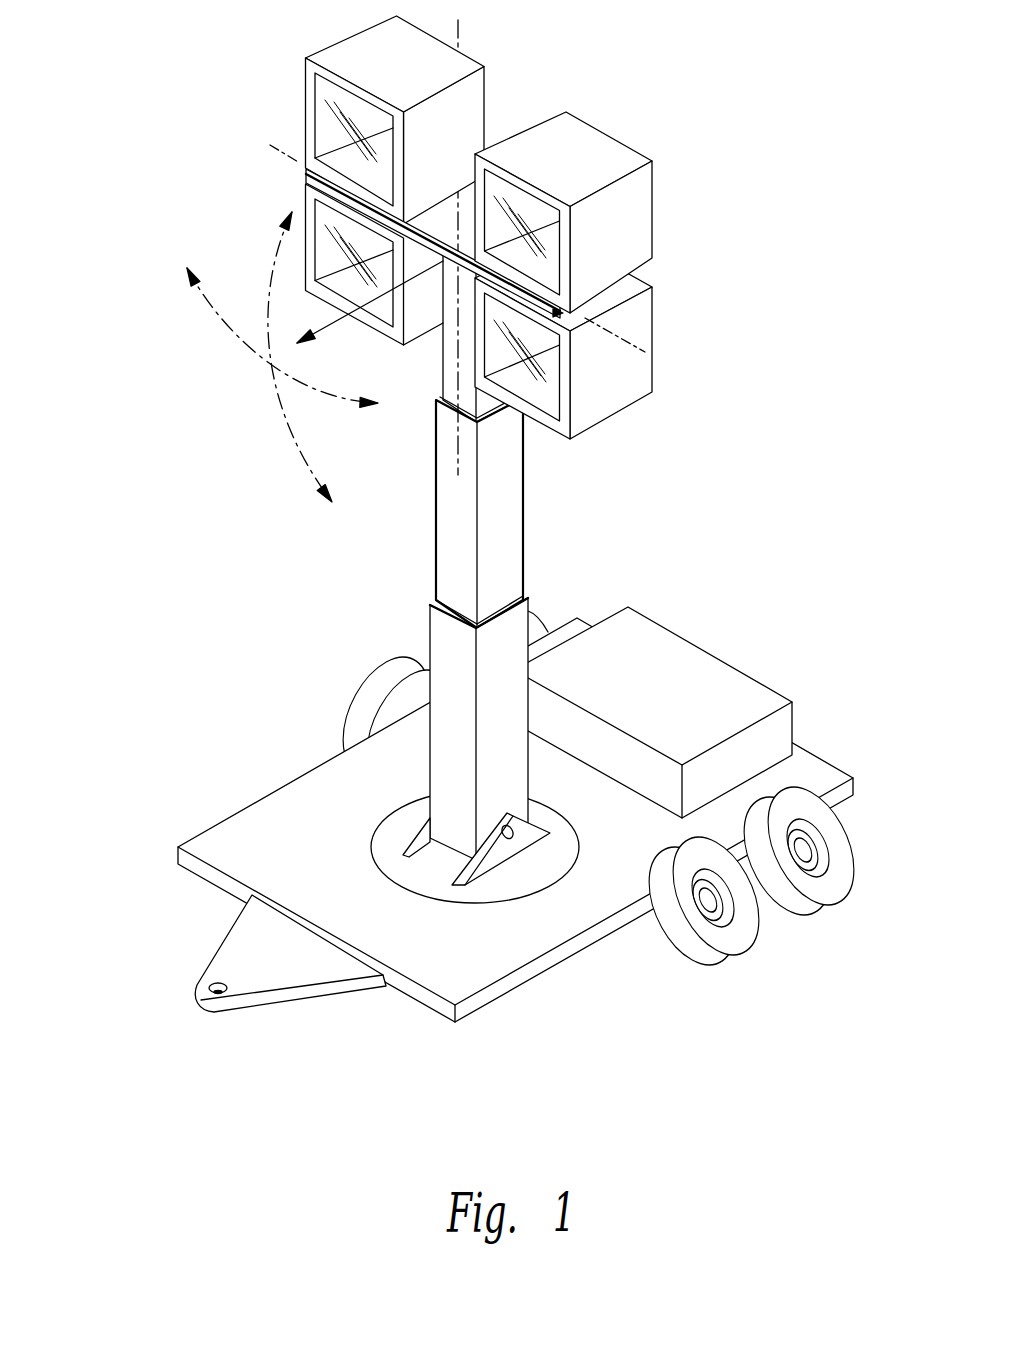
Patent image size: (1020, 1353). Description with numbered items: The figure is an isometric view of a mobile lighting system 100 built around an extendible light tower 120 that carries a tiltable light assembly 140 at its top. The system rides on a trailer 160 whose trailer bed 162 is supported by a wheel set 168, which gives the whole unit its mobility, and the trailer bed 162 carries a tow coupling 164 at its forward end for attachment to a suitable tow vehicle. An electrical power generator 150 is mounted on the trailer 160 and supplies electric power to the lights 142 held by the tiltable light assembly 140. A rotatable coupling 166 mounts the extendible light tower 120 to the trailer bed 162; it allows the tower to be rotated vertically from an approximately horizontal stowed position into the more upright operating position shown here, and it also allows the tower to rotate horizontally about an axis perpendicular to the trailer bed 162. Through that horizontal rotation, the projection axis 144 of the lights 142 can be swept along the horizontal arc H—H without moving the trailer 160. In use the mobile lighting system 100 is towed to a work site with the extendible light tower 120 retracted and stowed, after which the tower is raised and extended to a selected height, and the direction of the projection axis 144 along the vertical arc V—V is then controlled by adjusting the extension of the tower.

The mobile lighting system 100 is at (485, 542).
The extendible light tower 120 is at (560, 537).
The tiltable light assembly 140 is at (498, 265).
The lights 142 is at (613, 139).
The projection axis 144 is at (321, 328).
The electrical power generator 150 is at (727, 657).
The trailer 160 is at (496, 839).
The trailer bed 162 is at (575, 945).
The tow coupling 164 is at (197, 993).
The rotatable coupling 166 is at (475, 904).
The wheel set 168 is at (852, 860).